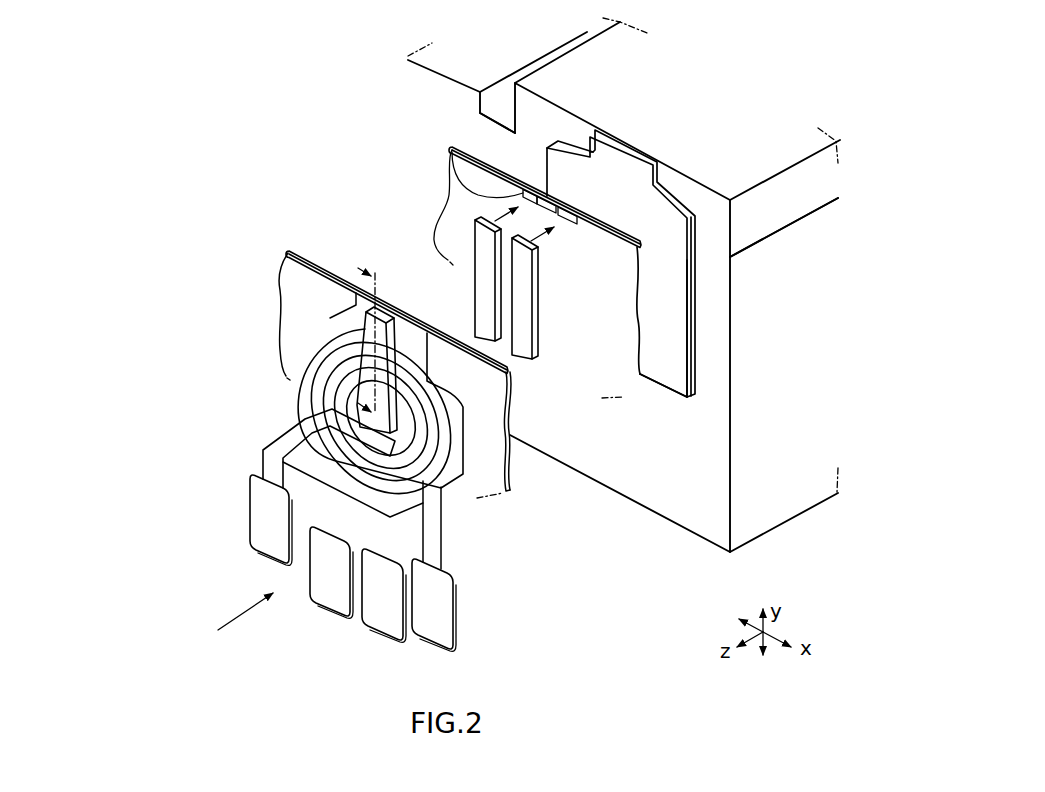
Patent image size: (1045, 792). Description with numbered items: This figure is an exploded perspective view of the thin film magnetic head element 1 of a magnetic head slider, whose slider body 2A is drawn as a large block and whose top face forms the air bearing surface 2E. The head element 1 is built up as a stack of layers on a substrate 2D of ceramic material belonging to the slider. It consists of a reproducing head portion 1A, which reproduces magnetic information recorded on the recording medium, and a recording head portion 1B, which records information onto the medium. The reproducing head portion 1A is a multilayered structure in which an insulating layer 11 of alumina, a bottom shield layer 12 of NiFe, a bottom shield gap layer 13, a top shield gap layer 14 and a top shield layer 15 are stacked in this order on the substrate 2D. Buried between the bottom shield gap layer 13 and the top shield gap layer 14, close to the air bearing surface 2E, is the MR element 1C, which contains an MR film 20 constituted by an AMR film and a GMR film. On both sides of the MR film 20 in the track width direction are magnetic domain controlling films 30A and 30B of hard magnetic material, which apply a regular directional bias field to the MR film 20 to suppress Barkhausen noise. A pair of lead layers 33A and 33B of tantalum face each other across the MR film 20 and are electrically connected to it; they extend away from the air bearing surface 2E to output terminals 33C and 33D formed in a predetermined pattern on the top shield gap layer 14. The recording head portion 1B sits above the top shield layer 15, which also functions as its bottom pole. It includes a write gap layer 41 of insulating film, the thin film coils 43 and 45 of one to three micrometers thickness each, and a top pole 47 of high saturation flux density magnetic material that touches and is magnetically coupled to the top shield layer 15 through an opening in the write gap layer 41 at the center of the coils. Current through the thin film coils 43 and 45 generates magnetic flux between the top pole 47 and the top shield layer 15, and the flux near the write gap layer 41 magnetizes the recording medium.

The thin film magnetic head element 1 is at (516, 507).
The reproducing head portion 1A is at (285, 25).
The recording head portion 1B is at (196, 218).
The MR element 1C is at (348, 88).
The housing 2A is at (742, 86).
The substrate 2D is at (572, 132).
The air bearing surface 2E is at (655, 101).
The insulating layer 11 is at (733, 237).
The bottom shield layer 12 is at (478, 172).
The bottom shield gap layer 13 is at (560, 162).
The top shield gap layer 14 is at (317, 268).
The top shield layer 15 is at (330, 321).
The MR film 20 is at (447, 172).
The magnetic domain controlling film 30A is at (525, 192).
The magnetic domain controlling film 30B is at (650, 265).
The lead layer 33A is at (485, 268).
The lead layer 33B is at (523, 310).
The output terminal 33C is at (327, 600).
The output terminal 33D is at (392, 623).
The write gap layer 41 is at (387, 312).
The thin film coil 43 is at (332, 352).
The thin film coil 45 is at (333, 416).
The top pole 47 is at (363, 370).